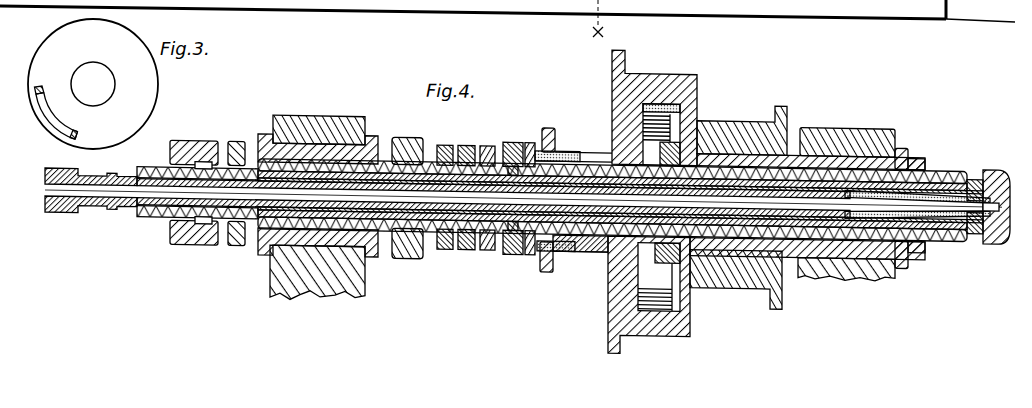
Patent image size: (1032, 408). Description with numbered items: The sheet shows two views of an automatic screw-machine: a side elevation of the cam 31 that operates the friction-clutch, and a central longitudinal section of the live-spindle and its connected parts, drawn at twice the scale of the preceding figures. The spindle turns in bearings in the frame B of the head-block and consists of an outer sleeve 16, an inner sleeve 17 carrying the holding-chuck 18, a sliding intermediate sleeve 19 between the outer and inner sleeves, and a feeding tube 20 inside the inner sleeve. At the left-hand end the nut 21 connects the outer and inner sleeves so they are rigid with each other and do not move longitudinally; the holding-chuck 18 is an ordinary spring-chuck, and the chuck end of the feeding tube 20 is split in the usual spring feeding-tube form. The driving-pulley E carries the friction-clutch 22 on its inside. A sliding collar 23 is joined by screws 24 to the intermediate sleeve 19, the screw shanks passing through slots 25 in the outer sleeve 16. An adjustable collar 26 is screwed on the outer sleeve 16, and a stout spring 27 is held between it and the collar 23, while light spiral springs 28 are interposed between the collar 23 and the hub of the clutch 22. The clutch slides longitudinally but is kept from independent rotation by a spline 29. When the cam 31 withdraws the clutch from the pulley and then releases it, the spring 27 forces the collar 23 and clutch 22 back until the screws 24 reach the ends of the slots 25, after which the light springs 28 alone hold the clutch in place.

In FIG. 4, the outer sleeve 16 is at (954, 228).
In FIG. 4, the inner sleeve 17 is at (158, 212).
In FIG. 4, the holding-chuck 18 is at (1009, 206).
In FIG. 4, the sliding intermediate sleeve 19 is at (988, 229).
In FIG. 4, the feeding tube 20 is at (129, 175).
In FIG. 4, the nut 21 is at (199, 138).
In FIG. 4, the friction-clutch 22 is at (613, 93).
In FIG. 4, the sliding collar 23 is at (508, 134).
In FIG. 4, the screws 24 is at (529, 134).
In FIG. 4, the slots 25 is at (490, 137).
In FIG. 4, the adjustable collar 26 is at (409, 131).
In FIG. 4, the stout spring 27 is at (445, 138).
In FIG. 4, the light spiral springs 28 is at (571, 142).
In FIG. 4, the spline 29 is at (604, 243).
In FIG. 3, the cam 31 is at (93, 84).
In FIG. 4, the frame of the head-block B is at (271, 277).
In FIG. 4, the driving-pulley E is at (720, 109).